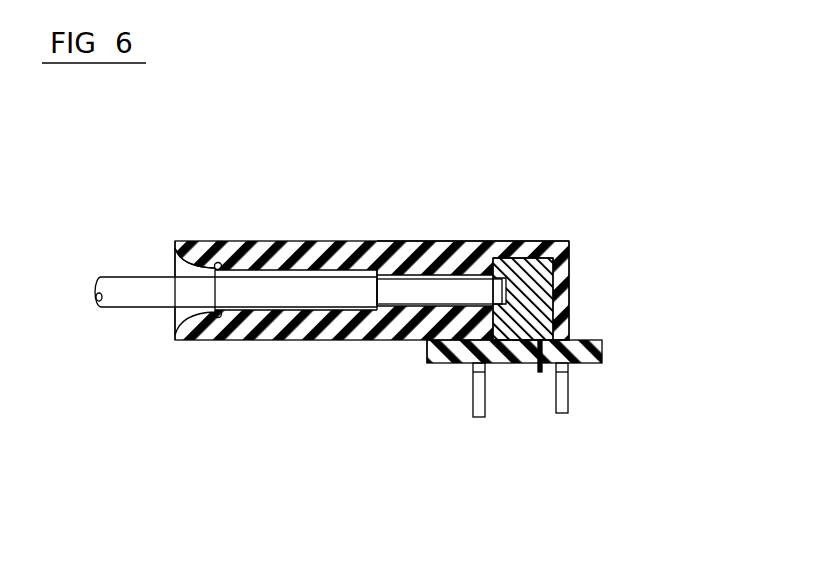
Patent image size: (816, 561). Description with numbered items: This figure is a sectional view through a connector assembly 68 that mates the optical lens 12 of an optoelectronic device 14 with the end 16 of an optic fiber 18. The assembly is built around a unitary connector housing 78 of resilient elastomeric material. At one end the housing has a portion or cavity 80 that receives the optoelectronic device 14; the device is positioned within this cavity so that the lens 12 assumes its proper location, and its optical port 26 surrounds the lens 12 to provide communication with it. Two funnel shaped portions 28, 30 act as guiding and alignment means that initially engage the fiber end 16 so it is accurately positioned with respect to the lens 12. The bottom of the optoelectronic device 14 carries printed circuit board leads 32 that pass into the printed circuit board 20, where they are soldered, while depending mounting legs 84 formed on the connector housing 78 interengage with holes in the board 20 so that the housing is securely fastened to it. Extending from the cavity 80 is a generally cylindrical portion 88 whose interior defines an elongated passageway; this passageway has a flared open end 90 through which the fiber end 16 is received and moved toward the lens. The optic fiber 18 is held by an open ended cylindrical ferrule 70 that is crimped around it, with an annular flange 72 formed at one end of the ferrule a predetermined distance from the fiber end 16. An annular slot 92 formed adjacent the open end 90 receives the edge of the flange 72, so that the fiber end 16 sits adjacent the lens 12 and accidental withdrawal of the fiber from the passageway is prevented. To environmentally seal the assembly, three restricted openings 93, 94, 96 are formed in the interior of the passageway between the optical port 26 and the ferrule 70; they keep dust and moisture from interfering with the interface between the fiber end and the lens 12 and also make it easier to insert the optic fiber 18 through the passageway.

The optical lens 12 is at (570, 300).
The optoelectronic device 14 is at (570, 279).
The fiber end 16 is at (437, 345).
The optic fiber 18 is at (137, 306).
The printed circuit board 20 is at (605, 356).
The optical port 26 is at (570, 328).
The funnel shaped portion 28 is at (564, 242).
The funnel shaped portion 30 is at (522, 242).
The printed circuit board leads 32 is at (540, 372).
The connector assembly 68 is at (670, 183).
The ferrule 70 is at (287, 242).
The annular flange 72 is at (198, 242).
The connector housing 78 is at (447, 242).
The cavity 80 is at (570, 260).
The mounting legs 84 is at (480, 405).
The cylindrical portion 88 is at (231, 242).
The flared open end 90 is at (175, 263).
The annular slot 92 is at (219, 318).
The restricted opening 93 is at (378, 242).
The restricted opening 94 is at (423, 242).
The restricted opening 96 is at (484, 242).